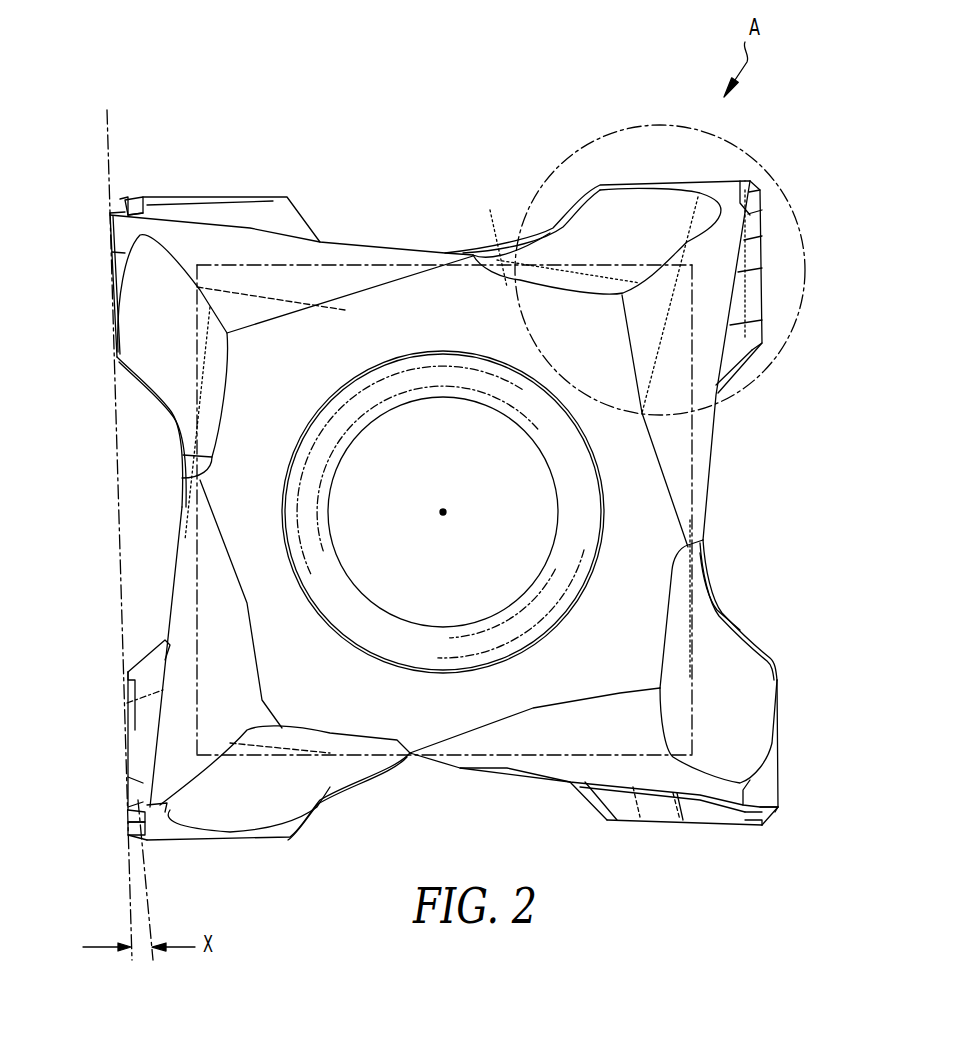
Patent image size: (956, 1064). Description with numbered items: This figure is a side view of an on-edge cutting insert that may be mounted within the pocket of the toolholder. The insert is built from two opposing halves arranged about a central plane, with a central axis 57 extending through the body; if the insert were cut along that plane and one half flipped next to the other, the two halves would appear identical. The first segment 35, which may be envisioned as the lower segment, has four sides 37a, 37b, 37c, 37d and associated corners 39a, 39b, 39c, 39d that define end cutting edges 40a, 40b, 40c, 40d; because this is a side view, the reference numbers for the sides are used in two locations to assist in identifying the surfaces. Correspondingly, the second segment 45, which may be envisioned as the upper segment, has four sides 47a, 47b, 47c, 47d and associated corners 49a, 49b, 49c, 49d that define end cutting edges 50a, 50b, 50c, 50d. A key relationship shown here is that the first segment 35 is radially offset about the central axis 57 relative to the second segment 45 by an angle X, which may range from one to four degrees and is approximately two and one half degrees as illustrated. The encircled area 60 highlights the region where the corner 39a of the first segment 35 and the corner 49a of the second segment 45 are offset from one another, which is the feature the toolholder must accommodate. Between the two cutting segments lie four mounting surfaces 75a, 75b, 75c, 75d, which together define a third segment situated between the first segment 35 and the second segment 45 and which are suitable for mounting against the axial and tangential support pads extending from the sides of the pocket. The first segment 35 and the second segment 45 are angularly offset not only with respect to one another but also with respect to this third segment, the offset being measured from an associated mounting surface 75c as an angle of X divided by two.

The first segment 35 is at (762, 277).
The side 37a is at (237, 197).
The side 37b is at (122, 212).
The side 37c is at (140, 836).
The side 37d is at (762, 340).
The corner 39a is at (758, 192).
The corner 39b is at (126, 203).
The corner 39c is at (128, 822).
The corner 39d is at (762, 820).
The end cutting edge 40a is at (762, 202).
The end cutting edge 40b is at (130, 200).
The end cutting edge 40c is at (128, 830).
The end cutting edge 40d is at (762, 826).
The second segment 45 is at (105, 331).
The side 47a is at (762, 237).
The side 47b is at (290, 228).
The side 47c is at (113, 270).
The side 47d is at (516, 770).
The corner 49a is at (722, 192).
The corner 49b is at (140, 207).
The corner 49c is at (155, 818).
The corner 49d is at (742, 797).
The end cutting edge 50a is at (746, 180).
The end cutting edge 50b is at (110, 214).
The end cutting edge 50c is at (138, 840).
The end cutting edge 50d is at (780, 807).
The central axis 57 is at (445, 510).
The encircled area 60 is at (760, 365).
The mounting surface 75a is at (697, 342).
The mounting surface 75b is at (252, 266).
The mounting surface 75c is at (197, 690).
The mounting surface 75d is at (580, 760).